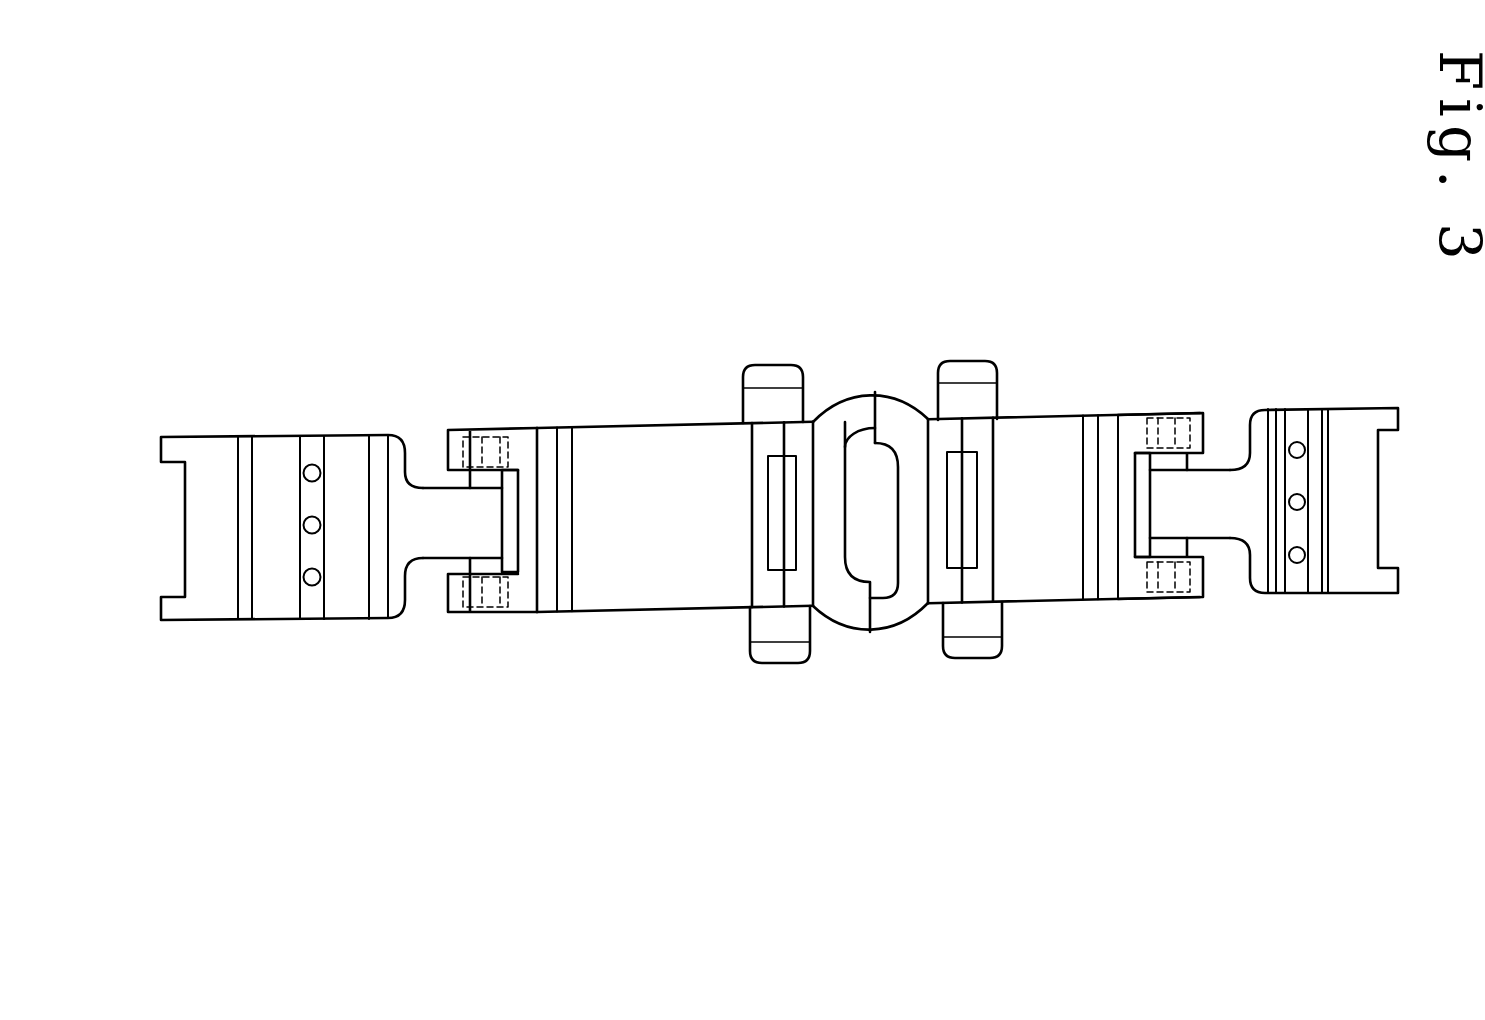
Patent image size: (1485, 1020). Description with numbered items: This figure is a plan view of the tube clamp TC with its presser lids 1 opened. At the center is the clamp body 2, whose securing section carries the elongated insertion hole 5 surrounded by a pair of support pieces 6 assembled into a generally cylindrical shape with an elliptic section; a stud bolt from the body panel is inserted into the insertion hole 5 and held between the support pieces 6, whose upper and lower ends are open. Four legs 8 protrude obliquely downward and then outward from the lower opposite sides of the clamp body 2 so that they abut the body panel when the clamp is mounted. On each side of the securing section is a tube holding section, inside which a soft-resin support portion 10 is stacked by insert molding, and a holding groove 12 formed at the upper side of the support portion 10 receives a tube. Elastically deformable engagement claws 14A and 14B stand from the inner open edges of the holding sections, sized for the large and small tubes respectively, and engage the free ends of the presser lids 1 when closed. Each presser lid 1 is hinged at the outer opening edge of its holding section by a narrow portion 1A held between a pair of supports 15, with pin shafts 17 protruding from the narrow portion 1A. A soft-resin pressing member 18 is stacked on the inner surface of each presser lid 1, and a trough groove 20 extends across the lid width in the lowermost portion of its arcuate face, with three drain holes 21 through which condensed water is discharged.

The presser lid 1 is at (218, 457).
The narrow portion 1A is at (438, 550).
The clamp body 2 is at (743, 400).
The insertion hole 5 is at (865, 472).
The support piece 6 is at (897, 417).
The leg 8 is at (775, 375).
The support portion 10 is at (868, 581).
The holding groove 12 is at (633, 582).
The engagement claw 14A is at (777, 550).
The engagement claw 14B is at (970, 555).
The support 15 is at (452, 430).
The pin shaft 17 is at (488, 477).
The pressing member 18 is at (278, 610).
The trough groove 20 is at (318, 608).
The drain hole 21 is at (312, 464).
The tube clamp TC is at (877, 363).